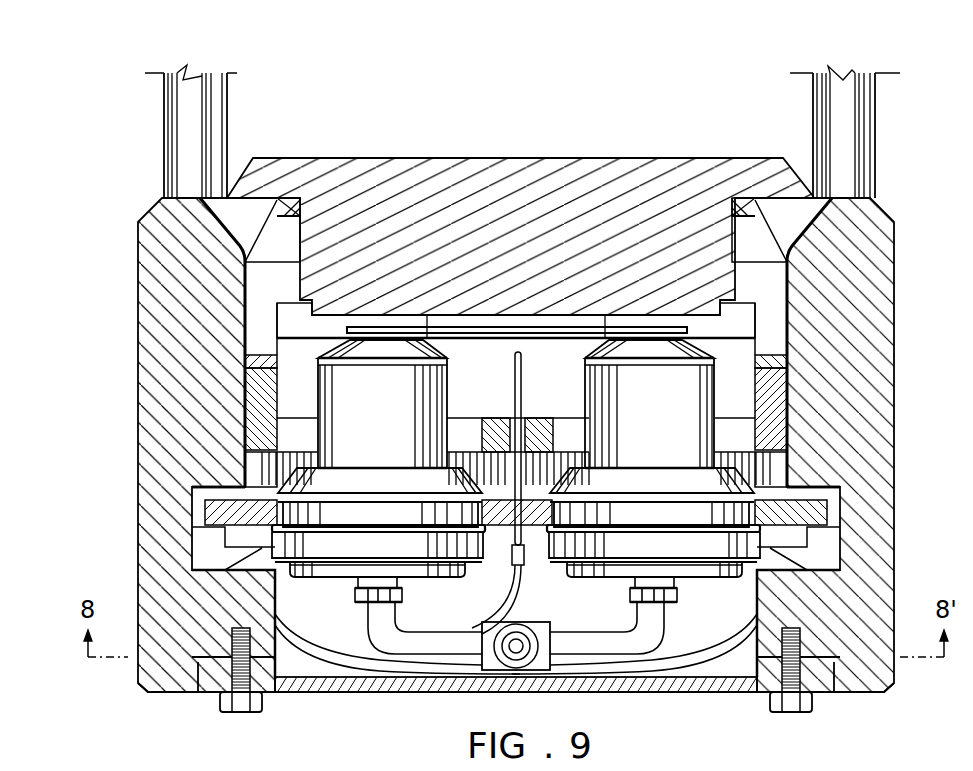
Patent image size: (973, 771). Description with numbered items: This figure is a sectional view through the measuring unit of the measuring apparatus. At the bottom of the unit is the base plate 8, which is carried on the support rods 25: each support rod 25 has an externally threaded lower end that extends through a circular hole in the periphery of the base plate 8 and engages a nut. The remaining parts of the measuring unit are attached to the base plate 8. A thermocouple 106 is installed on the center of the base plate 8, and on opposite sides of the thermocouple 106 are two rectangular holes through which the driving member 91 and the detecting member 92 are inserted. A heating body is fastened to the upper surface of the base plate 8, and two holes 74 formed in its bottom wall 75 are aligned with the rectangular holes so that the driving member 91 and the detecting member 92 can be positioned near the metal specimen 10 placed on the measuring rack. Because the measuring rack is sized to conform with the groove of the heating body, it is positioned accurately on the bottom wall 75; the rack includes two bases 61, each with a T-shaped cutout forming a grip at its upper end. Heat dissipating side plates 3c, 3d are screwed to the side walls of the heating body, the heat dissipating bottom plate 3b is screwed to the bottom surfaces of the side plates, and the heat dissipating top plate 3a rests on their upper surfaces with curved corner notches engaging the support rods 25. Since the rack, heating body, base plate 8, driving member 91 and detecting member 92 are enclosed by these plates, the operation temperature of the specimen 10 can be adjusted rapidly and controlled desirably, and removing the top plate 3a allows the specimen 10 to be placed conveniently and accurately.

The heat dissipating top plate 3a is at (540, 165).
The heat dissipating bottom plate 3b is at (325, 685).
The heat dissipating side plate 3c is at (152, 234).
The heat dissipating side plate 3d is at (883, 262).
The support rod 25 is at (176, 134).
The base 61 is at (262, 280).
The bottom wall 75 is at (250, 360).
The hole 74 is at (290, 428).
The detecting member 92 is at (327, 443).
The driving member 91 is at (707, 460).
The thermocouple 106 is at (514, 392).
The metal specimen 10 is at (567, 333).
The base plate 8 is at (536, 535).